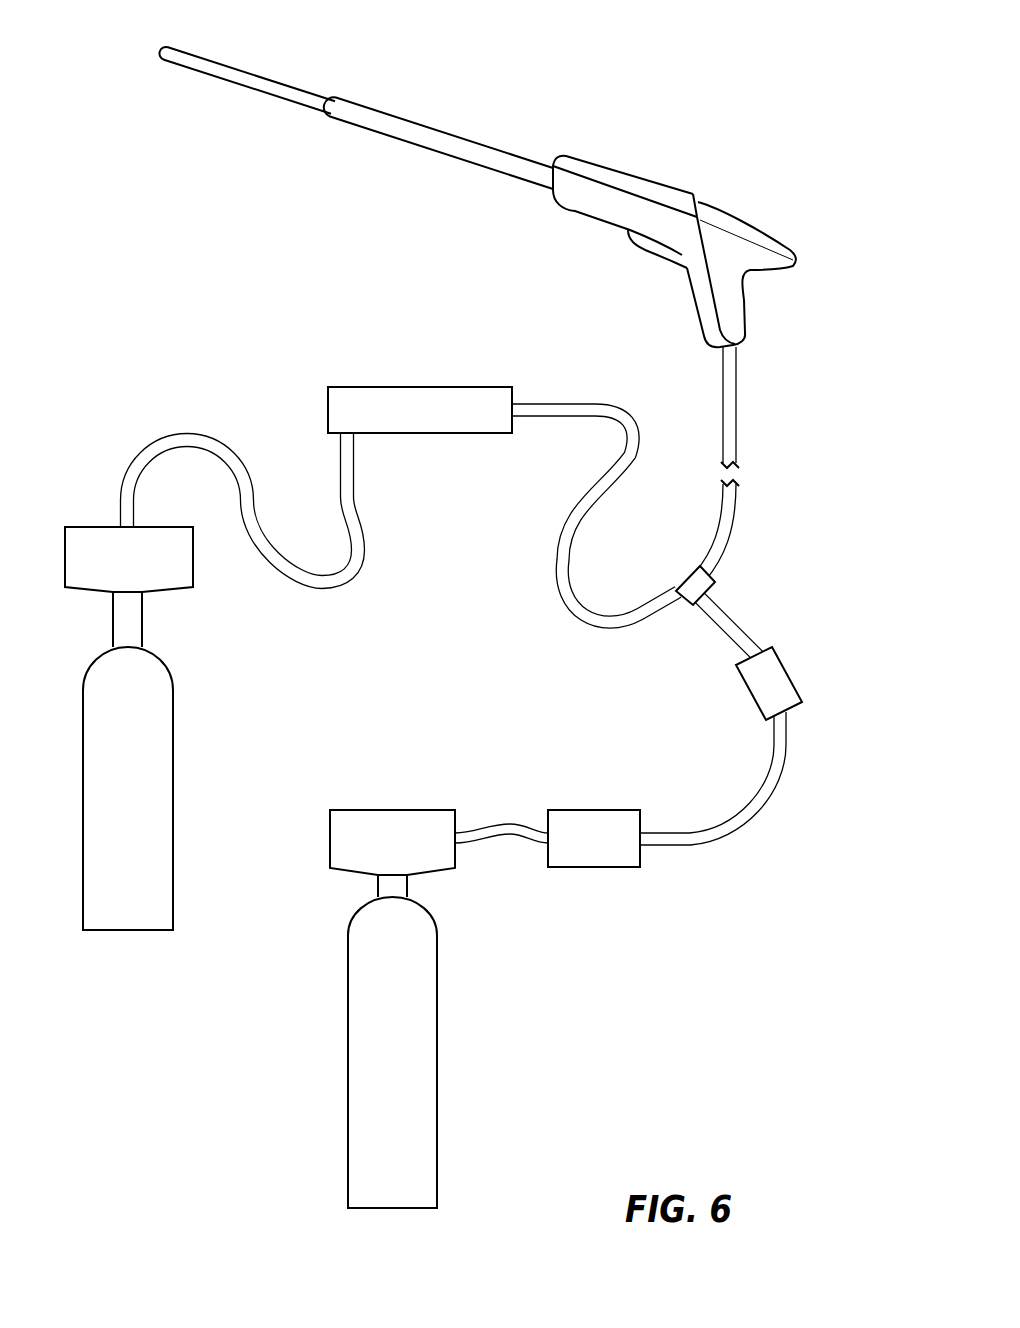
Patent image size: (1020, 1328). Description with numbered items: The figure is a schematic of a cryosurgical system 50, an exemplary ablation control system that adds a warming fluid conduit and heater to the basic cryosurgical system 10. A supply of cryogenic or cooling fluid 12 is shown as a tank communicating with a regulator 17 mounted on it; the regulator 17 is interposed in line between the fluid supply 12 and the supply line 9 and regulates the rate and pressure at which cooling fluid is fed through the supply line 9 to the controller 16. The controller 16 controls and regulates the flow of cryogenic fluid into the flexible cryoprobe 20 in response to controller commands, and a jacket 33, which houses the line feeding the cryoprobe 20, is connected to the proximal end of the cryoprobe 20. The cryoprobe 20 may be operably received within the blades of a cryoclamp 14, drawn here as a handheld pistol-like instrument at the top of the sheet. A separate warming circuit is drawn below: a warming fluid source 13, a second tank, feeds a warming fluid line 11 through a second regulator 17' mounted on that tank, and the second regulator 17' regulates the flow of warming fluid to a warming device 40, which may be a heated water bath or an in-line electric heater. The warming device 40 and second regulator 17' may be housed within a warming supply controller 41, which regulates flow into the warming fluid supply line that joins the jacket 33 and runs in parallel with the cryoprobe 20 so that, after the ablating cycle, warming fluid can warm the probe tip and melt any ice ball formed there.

The supply line 9 is at (150, 440).
The cryosurgical system 10 is at (423, 372).
The warming fluid line 11 is at (737, 828).
The supply of cryogenic or cooling fluid 12 is at (174, 817).
The warming fluid source 13 is at (438, 1063).
The cryoclamp 14 is at (560, 112).
The controller 16 is at (357, 387).
The regulator 17 is at (129, 587).
The second regulator 17' is at (439, 853).
The cryoprobe 20 is at (257, 74).
The jacket 33 is at (731, 425).
The warming device 40 is at (581, 850).
The warming supply controller 41 is at (756, 695).
The cryosurgical system 50 is at (800, 634).